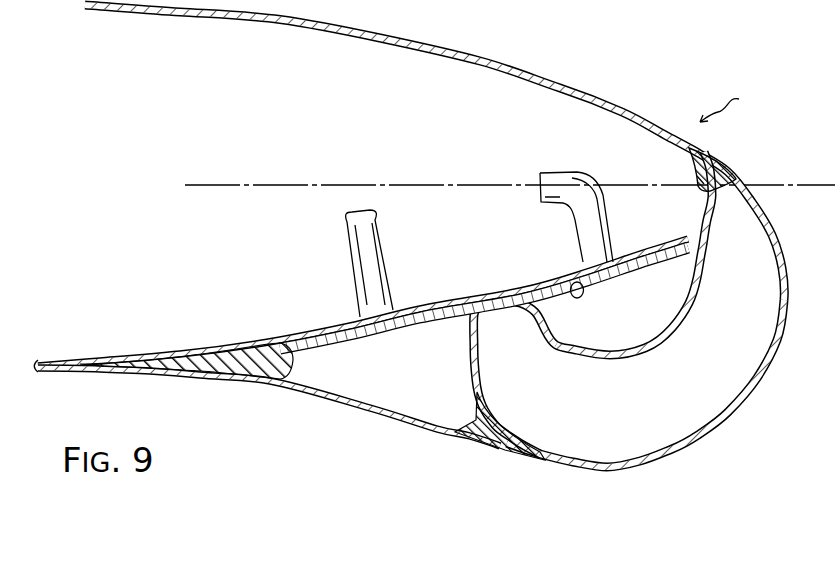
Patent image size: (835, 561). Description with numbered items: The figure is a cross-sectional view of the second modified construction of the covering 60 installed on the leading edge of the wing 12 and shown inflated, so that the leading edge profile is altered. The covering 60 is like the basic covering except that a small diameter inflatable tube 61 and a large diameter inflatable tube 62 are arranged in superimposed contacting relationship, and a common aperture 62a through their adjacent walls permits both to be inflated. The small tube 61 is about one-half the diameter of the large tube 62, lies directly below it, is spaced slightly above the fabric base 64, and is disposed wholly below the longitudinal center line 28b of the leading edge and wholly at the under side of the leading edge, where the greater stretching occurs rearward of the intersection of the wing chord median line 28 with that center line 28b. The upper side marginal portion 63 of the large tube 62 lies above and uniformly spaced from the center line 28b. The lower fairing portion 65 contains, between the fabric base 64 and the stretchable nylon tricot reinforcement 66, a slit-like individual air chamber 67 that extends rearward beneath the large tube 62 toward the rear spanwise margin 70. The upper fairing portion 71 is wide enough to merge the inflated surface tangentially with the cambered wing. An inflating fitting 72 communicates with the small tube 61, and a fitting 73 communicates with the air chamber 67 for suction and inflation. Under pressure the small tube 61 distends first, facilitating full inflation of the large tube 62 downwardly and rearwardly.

The wing 12 is at (492, 68).
The wing chord median line 28 is at (380, 185).
The longitudinal center line of the leading edge 28b is at (698, 180).
The second modified construction of the covering 60 is at (735, 104).
The small diameter inflatable tube 61 is at (573, 283).
The large diameter inflatable tube 62 is at (760, 388).
The common aperture 62a is at (640, 350).
The upper side marginal portion of the large tube 63 is at (727, 164).
The fabric base 64 is at (232, 350).
The lower fairing portion 65 is at (200, 378).
The stretchable nylon tricot reinforcement 66 is at (515, 450).
The individual air chamber 67 is at (407, 368).
The rear spanwise margin 70 is at (80, 368).
The upper fairing portion 71 is at (707, 170).
The inflating fitting 72 is at (586, 221).
The fitting 73 is at (357, 273).